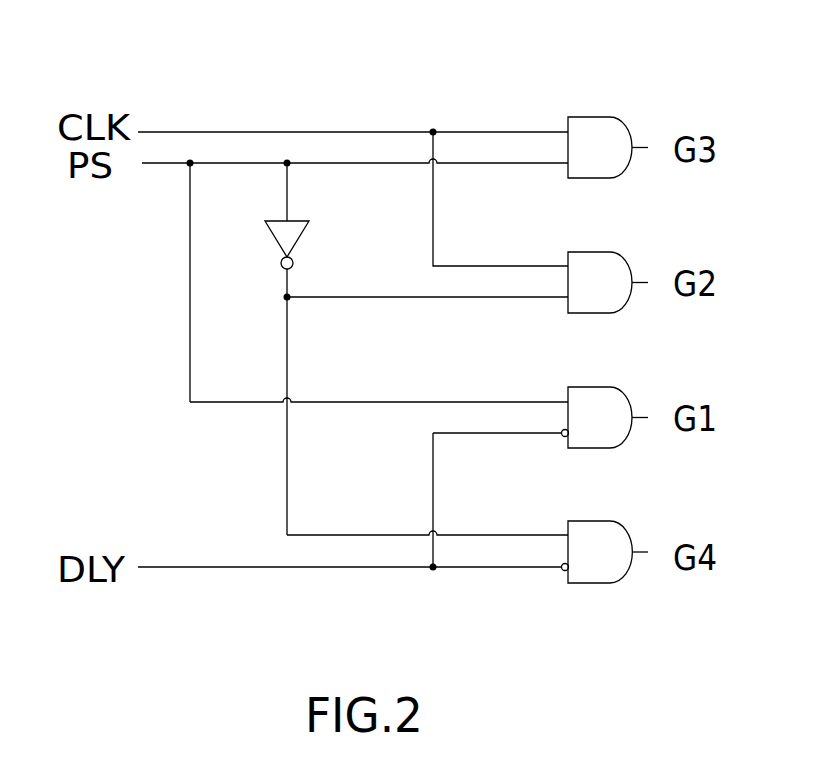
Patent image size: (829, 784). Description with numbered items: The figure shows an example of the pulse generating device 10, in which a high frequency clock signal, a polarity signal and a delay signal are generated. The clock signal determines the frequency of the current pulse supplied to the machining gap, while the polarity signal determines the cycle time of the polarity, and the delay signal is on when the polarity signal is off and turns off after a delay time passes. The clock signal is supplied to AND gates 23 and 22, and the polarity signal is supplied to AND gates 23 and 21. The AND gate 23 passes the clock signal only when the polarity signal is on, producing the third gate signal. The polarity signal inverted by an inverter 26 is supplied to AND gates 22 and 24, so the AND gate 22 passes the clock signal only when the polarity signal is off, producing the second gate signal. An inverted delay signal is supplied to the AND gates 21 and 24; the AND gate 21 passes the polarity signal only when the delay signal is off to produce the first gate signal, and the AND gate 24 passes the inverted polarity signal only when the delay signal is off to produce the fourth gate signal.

The pulse generating device 10 is at (279, 47).
The AND gate 21 is at (580, 386).
The AND gate 22 is at (575, 251).
The AND gate 23 is at (582, 117).
The AND gate 24 is at (591, 522).
The inverter 26 is at (300, 251).